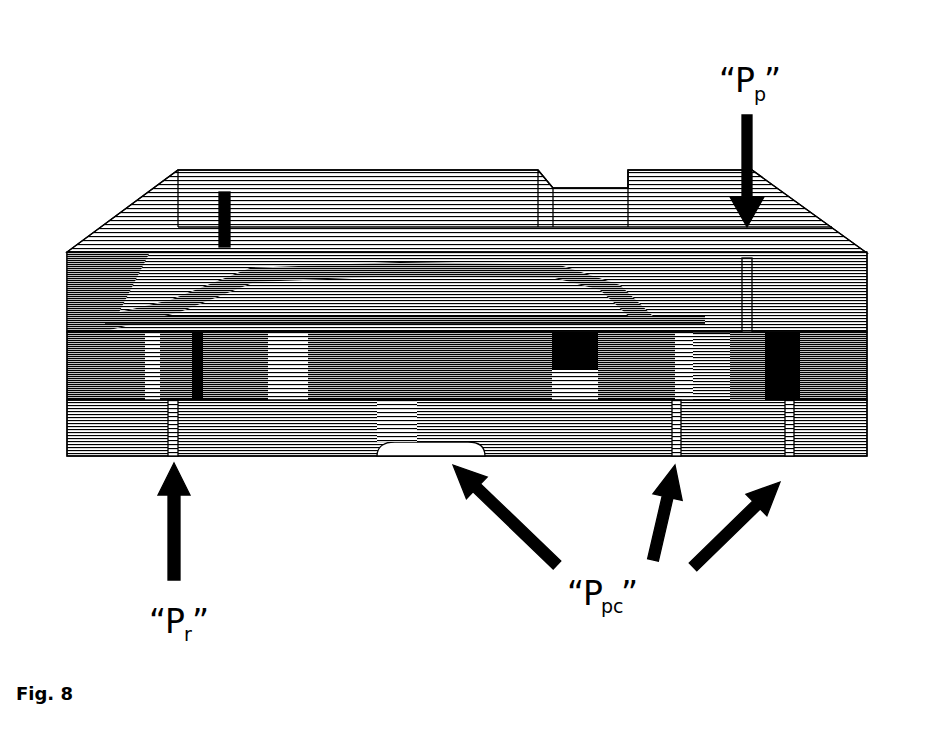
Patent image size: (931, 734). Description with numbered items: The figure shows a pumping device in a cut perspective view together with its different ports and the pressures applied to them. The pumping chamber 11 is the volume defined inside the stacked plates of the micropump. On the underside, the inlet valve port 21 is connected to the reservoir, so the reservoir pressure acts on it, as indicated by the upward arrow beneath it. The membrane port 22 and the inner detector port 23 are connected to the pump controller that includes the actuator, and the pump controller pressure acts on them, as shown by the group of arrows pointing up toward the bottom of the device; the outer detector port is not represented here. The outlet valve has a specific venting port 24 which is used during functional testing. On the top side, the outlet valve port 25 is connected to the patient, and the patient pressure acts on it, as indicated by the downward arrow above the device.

The pumping chamber 11 is at (420, 318).
The inlet valve port 21 is at (177, 415).
The membrane port 22 is at (430, 417).
The inner detector port 23 is at (677, 417).
The venting port 24 is at (790, 418).
The outlet valve port 25 is at (747, 258).